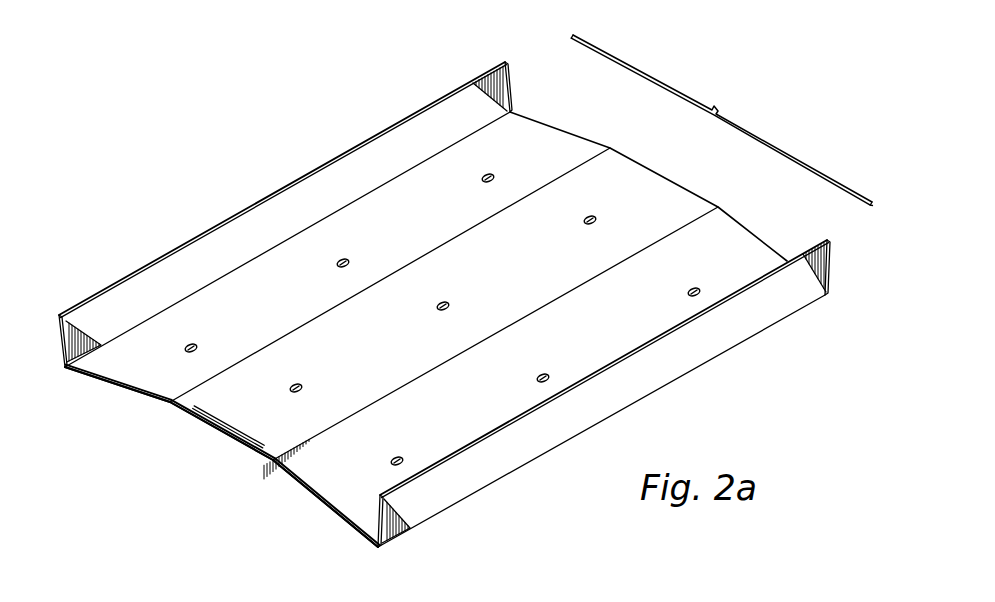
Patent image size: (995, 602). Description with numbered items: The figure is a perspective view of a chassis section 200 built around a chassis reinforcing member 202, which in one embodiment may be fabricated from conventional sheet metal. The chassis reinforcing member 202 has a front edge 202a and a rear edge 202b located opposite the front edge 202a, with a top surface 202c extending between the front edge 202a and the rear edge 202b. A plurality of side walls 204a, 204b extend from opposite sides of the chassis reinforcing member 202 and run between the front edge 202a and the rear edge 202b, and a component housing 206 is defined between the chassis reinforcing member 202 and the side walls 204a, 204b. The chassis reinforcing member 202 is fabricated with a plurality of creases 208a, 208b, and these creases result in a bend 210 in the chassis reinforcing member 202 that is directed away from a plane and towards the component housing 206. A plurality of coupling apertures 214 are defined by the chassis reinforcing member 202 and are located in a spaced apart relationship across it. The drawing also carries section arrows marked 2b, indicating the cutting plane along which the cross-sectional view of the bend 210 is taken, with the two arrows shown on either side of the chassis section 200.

The chassis section 200 is at (340, 126).
The chassis reinforcing member 202 is at (756, 233).
The front edge 202a is at (207, 423).
The rear edge 202b is at (698, 195).
The top surface 202c is at (663, 157).
The side wall 204a is at (285, 188).
The side wall 204b is at (670, 368).
The component housing 206 is at (721, 120).
The crease 208a is at (463, 233).
The crease 208b is at (567, 292).
The bend 210 is at (113, 388).
The coupling apertures 214 is at (493, 175).
The section line 2b is at (112, 242).